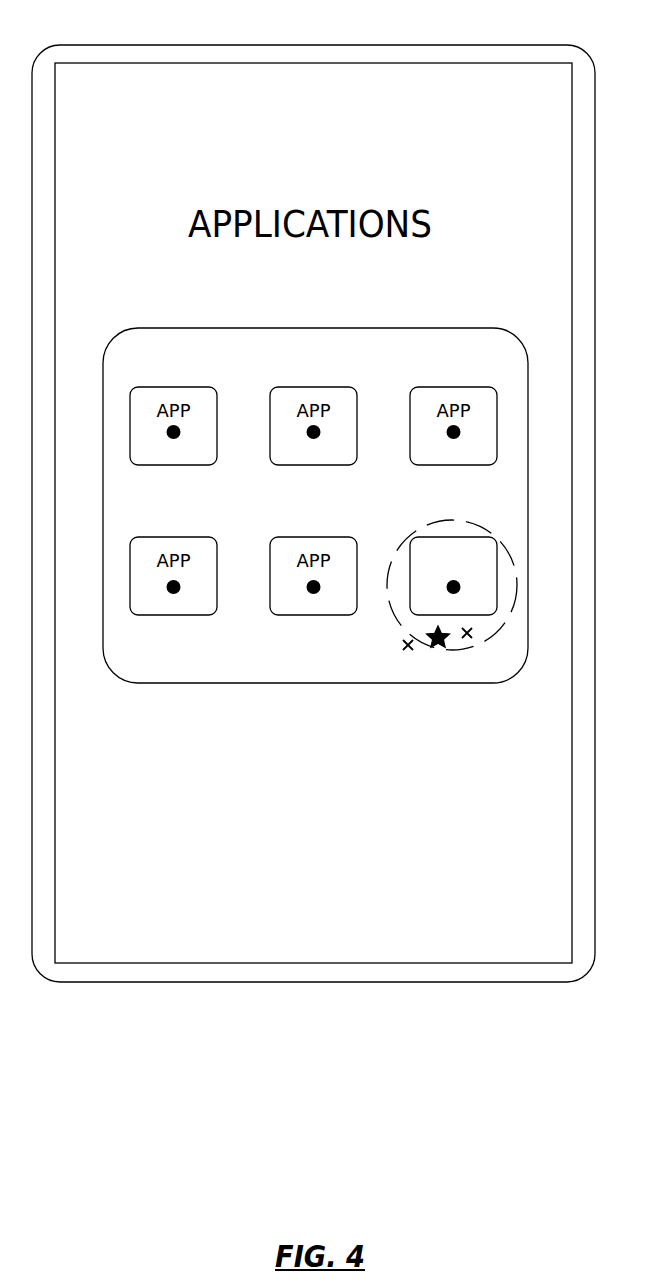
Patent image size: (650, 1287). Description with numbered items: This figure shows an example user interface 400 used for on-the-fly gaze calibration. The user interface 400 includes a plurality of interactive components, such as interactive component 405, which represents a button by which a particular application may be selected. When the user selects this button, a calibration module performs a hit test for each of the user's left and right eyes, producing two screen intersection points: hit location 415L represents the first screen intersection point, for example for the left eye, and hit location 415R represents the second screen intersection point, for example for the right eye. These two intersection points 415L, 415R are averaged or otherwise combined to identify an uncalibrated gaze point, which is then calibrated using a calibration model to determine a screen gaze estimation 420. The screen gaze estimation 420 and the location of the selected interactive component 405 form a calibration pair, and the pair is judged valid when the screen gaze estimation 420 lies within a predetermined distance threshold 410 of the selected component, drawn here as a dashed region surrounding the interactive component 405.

The user interface 400 is at (497, 63).
The interactive component 405 is at (487, 560).
The predetermined distance threshold 410 is at (399, 552).
The hit location 415L is at (406, 655).
The hit location 415R is at (470, 638).
The screen gaze estimation 420 is at (442, 646).